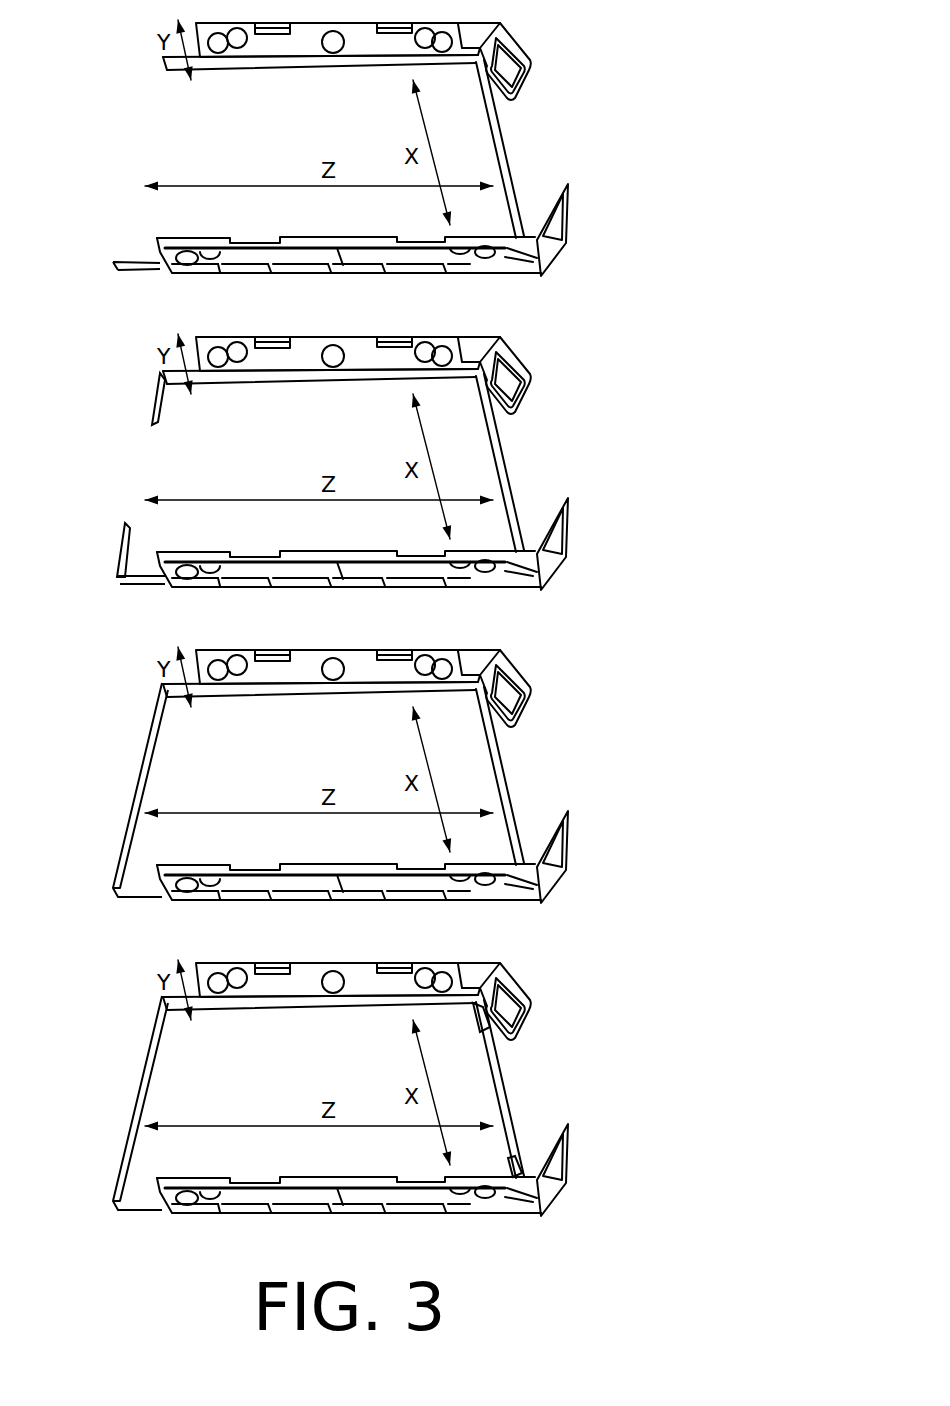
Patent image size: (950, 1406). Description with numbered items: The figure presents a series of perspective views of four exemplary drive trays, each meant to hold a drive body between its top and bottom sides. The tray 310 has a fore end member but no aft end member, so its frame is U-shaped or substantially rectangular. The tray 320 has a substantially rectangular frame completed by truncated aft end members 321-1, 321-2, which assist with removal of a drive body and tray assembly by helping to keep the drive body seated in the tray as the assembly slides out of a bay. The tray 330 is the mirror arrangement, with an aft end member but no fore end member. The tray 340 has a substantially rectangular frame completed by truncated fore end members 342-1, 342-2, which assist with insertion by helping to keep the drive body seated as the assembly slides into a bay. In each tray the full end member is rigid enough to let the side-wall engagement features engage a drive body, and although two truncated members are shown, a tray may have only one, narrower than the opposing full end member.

The tray 310 is at (556, 42).
The tray 320 is at (388, 461).
The truncated aft end member 321-1 is at (112, 396).
The truncated aft end member 321-2 is at (93, 553).
The tray 330 is at (372, 774).
The tray 340 is at (376, 1087).
The truncated fore end member 342-1 is at (538, 1039).
The truncated fore end member 342-2 is at (557, 1131).